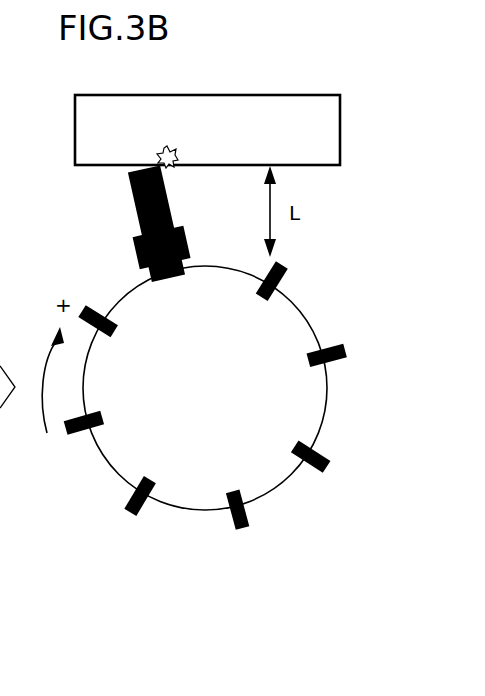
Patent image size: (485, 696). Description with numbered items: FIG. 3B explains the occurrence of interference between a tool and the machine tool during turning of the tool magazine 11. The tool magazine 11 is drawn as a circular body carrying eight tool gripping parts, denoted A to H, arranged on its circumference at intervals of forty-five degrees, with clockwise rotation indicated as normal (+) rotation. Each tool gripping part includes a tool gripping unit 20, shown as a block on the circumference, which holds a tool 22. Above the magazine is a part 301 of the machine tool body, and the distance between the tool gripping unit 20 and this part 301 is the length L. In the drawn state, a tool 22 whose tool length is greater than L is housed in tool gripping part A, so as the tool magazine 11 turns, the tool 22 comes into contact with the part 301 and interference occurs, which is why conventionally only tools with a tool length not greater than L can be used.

The part of the machine tool body 301 is at (197, 90).
The tool 22 is at (136, 208).
The tool magazine 11 is at (181, 455).
The tool gripping unit 20 is at (312, 456).